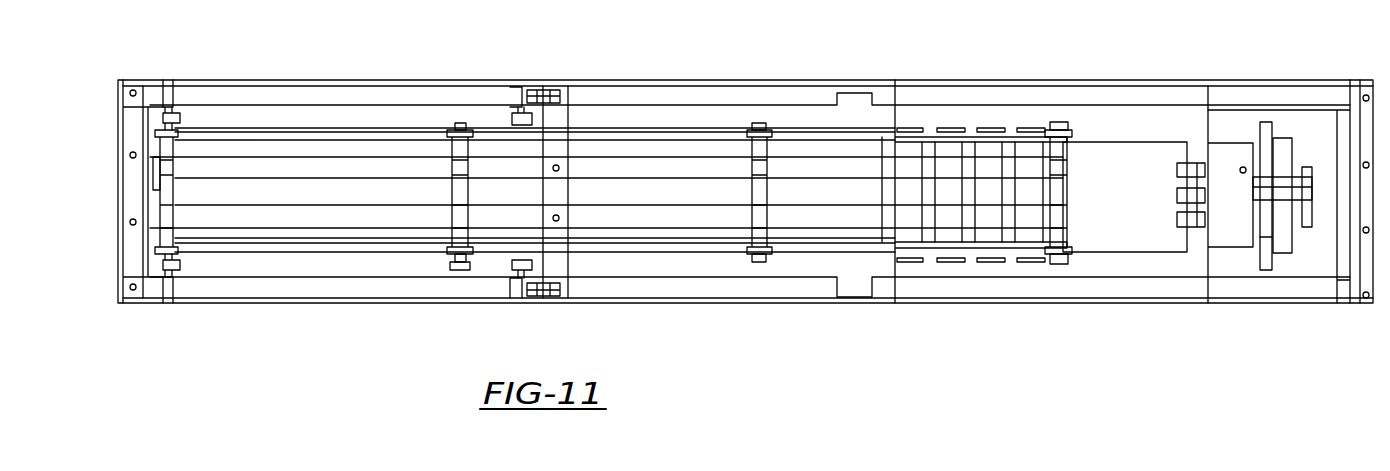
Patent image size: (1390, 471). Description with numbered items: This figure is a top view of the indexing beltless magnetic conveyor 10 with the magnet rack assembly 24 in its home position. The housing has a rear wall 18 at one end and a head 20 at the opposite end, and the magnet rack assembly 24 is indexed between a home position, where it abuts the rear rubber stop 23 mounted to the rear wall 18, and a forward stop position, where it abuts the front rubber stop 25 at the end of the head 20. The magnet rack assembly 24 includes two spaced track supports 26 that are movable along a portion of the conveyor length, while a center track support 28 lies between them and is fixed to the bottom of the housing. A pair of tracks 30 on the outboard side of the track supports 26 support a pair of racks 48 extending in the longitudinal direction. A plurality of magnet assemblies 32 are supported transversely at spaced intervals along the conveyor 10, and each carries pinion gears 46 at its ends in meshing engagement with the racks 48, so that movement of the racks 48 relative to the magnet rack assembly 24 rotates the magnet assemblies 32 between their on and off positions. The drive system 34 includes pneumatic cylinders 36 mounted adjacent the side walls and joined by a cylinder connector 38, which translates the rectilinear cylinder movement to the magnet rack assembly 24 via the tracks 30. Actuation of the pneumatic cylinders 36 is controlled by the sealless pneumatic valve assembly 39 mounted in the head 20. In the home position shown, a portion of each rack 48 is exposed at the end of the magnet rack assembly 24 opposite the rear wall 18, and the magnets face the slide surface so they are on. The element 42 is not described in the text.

The conveyor 10 is at (217, 316).
The rear wall 18 is at (118, 262).
The head 20 is at (1298, 141).
The rear rubber stop 23 is at (143, 128).
The magnet rack assembly 24 is at (625, 130).
The front rubber stop 25 is at (1352, 227).
The track supports 26 is at (698, 160).
The center track support 28 is at (343, 205).
The tracks 30 is at (810, 243).
The magnet assemblies 32 is at (177, 167).
The drive system 34 is at (390, 97).
The pneumatic cylinder 36 is at (343, 82).
The cylinder connector 38 is at (583, 112).
The sealless pneumatic valve assembly 39 is at (1225, 150).
The nut 42 is at (455, 270).
The pinion gear 46 is at (176, 136).
The racks 48 is at (1093, 145).